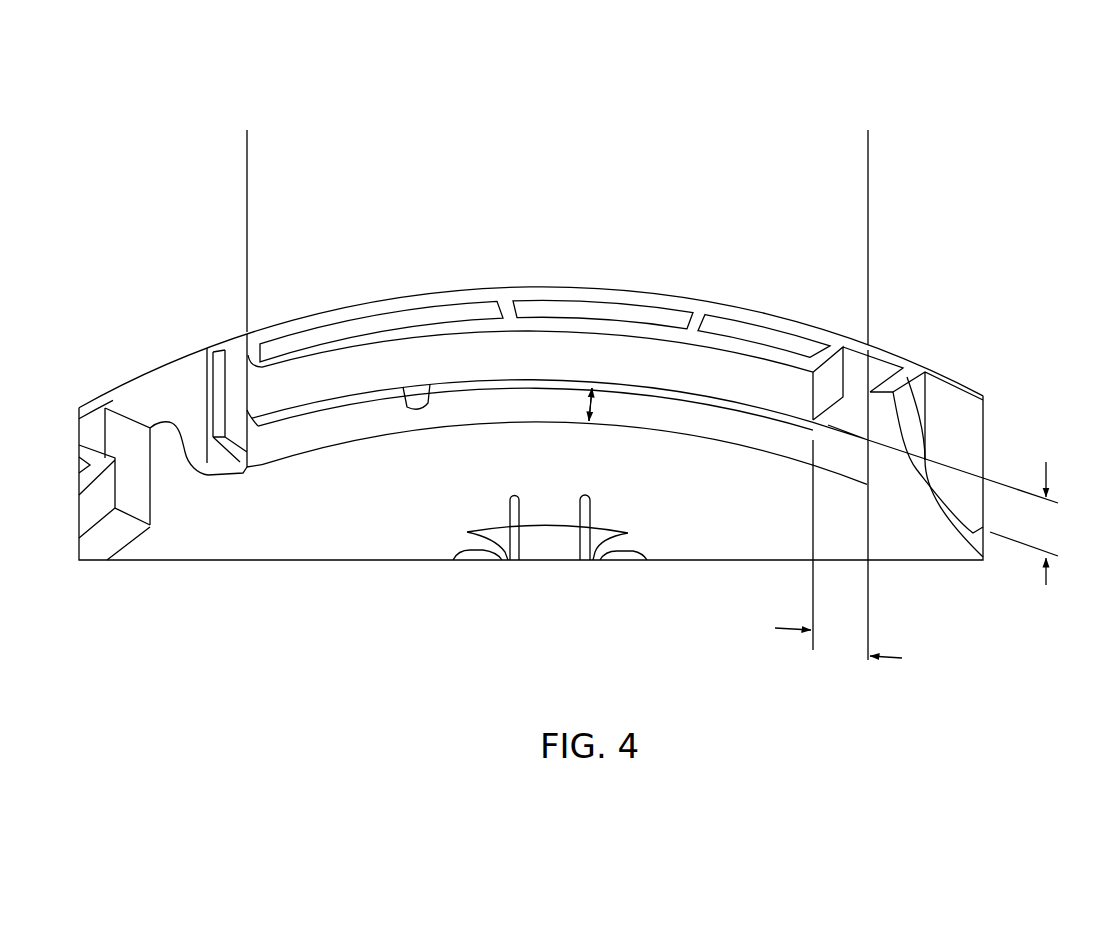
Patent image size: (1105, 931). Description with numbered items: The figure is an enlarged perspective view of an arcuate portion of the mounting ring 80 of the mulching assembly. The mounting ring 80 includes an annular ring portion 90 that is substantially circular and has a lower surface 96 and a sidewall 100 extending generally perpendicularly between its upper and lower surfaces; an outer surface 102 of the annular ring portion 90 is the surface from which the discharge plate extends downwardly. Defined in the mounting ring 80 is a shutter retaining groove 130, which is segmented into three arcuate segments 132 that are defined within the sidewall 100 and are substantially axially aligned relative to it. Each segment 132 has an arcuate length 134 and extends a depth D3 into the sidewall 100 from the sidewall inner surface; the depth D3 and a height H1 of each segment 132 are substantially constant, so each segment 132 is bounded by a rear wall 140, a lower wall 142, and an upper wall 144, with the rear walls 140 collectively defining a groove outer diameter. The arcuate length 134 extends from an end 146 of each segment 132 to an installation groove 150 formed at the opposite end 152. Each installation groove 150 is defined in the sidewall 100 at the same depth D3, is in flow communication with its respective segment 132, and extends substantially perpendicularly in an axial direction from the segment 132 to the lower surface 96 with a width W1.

The mounting ring 80 is at (226, 312).
The annular ring portion 90 is at (525, 256).
The lower surface 96 is at (700, 312).
The sidewall 100 is at (850, 518).
The outer surface 102 is at (940, 372).
The shutter retaining groove 130 is at (744, 425).
The arcuate segments 132 is at (344, 418).
The arcuate length 134 is at (250, 158).
The rear wall 140 is at (264, 431).
The lower wall 142 is at (429, 384).
The upper wall 144 is at (508, 405).
The end 146 is at (254, 467).
The installation groove 150 is at (880, 360).
The opposite end 152 is at (853, 449).
The depth D3 is at (592, 388).
The width W1 is at (838, 505).
The height H1 is at (1024, 523).